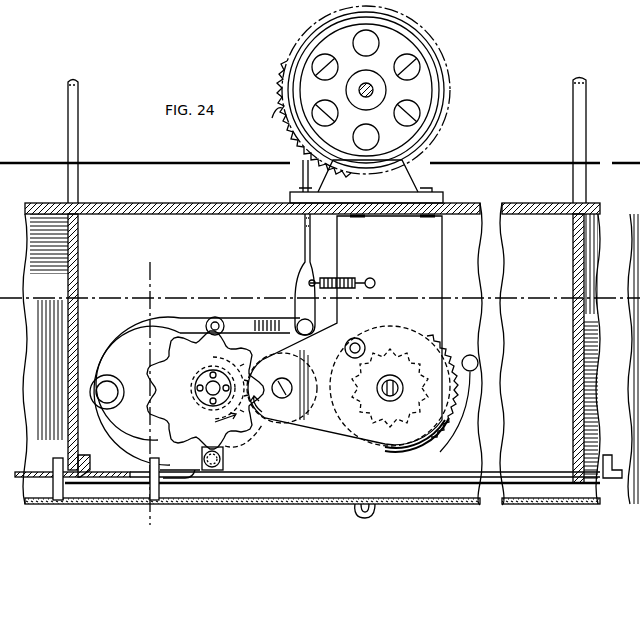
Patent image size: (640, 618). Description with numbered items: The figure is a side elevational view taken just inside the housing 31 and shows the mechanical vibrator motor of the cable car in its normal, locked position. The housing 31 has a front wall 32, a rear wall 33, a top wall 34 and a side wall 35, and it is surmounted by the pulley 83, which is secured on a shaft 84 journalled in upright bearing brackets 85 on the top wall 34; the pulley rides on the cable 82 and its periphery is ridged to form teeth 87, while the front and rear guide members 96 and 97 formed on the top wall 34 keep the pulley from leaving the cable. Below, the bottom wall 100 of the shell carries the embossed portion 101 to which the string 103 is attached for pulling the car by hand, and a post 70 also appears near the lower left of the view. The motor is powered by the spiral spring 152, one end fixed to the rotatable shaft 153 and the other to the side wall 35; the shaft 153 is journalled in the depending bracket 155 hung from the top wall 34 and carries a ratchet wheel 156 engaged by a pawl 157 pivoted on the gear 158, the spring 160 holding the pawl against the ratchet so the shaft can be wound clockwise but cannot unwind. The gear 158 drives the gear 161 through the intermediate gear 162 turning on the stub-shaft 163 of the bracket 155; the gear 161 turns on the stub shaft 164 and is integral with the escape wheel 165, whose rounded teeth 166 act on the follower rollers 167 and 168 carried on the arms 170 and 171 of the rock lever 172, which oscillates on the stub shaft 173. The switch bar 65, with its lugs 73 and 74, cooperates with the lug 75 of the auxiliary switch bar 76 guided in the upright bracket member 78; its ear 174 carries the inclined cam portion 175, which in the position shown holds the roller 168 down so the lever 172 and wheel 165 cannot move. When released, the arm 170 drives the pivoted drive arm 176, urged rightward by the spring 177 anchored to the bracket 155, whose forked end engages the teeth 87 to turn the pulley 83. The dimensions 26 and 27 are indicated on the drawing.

The centre line distance 26 is at (621, 288).
The spacing dimension 27 is at (140, 311).
The motor housing 31 is at (118, 200).
The front wall 32 is at (562, 250).
The rear wall 33 is at (79, 263).
The top wall 34 is at (462, 213).
The side wall 35 is at (230, 206).
The switch bar 65 is at (312, 462).
The post 70 is at (164, 502).
The lug 73 is at (88, 470).
The lug 74 is at (612, 455).
The lug 75 is at (82, 455).
The auxiliary switch bar 76 is at (27, 515).
The upright bracket member 78 is at (62, 500).
The cable 82 is at (138, 176).
The pulley 83 is at (437, 81).
The shaft 84 is at (359, 92).
The bearing brackets 85 is at (298, 184).
The teeth 87 is at (306, 119).
The front guide member 96 is at (78, 140).
The rear guide member 97 is at (573, 134).
The bottom wall 100 is at (448, 505).
The embossed portion 101 is at (362, 508).
The string 103 is at (366, 515).
The spiral spring 152 is at (437, 430).
The rotatable shaft 153 is at (394, 378).
The depending bracket 155 is at (440, 260).
The ratchet wheel 156 is at (430, 447).
The pawl 157 is at (390, 330).
The gear 158 is at (452, 357).
The spring 160 is at (360, 340).
The gear 161 is at (208, 404).
The intermediate gear 162 is at (284, 424).
The stub-shaft 163 is at (323, 344).
The stub shaft 164 is at (210, 380).
The escape wheel 165 is at (222, 328).
The rounded teeth 166 is at (154, 370).
The follower roller 167 is at (208, 322).
The follower roller 168 is at (238, 444).
The arm 170 is at (122, 339).
The arm 171 is at (192, 478).
The rock lever 172 is at (128, 426).
The stub shaft 173 is at (108, 380).
The ear 174 is at (224, 462).
The inclined cam portion 175 is at (200, 450).
The drive arm 176 is at (304, 250).
The spring 177 is at (360, 272).